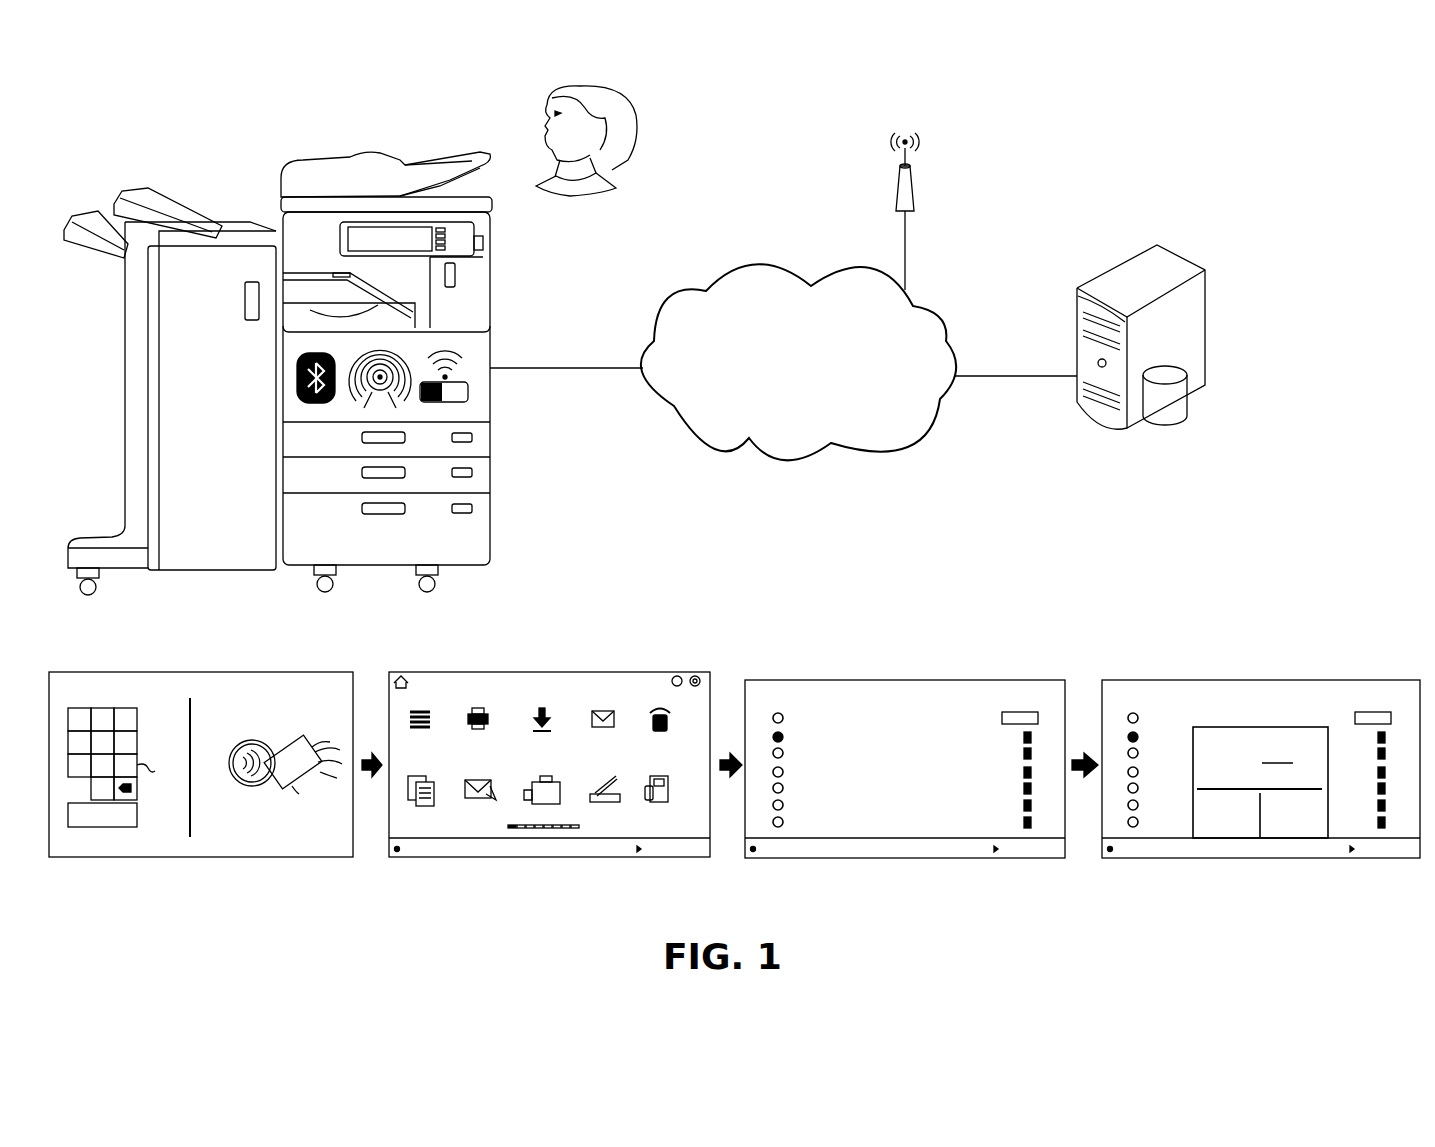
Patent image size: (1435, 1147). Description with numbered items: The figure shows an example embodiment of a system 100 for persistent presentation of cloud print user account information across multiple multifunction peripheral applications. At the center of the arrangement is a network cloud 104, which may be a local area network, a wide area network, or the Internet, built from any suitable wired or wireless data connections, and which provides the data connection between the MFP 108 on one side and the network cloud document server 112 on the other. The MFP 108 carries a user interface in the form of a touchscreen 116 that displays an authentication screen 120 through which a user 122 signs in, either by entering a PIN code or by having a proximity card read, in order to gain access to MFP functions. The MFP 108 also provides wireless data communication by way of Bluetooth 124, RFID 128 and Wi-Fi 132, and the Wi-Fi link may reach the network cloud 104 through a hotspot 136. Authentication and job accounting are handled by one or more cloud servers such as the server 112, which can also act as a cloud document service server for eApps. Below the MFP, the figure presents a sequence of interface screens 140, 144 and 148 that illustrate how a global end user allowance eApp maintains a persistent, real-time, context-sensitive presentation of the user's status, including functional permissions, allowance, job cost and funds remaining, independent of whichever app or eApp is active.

The system 100 is at (1130, 197).
The network cloud 104 is at (775, 458).
The MFP 108 is at (490, 524).
The network cloud document server 112 is at (1160, 428).
The touchscreen 116 is at (426, 240).
The authentication screen 120 is at (392, 250).
The user 122 is at (632, 130).
The Bluetooth 124 is at (297, 379).
The RFID 128 is at (392, 397).
The Wi-Fi 132 is at (470, 368).
The hotspot 136 is at (913, 197).
The interface screen 140 is at (543, 672).
The interface screen 144 is at (868, 680).
The interface screen 148 is at (1217, 680).